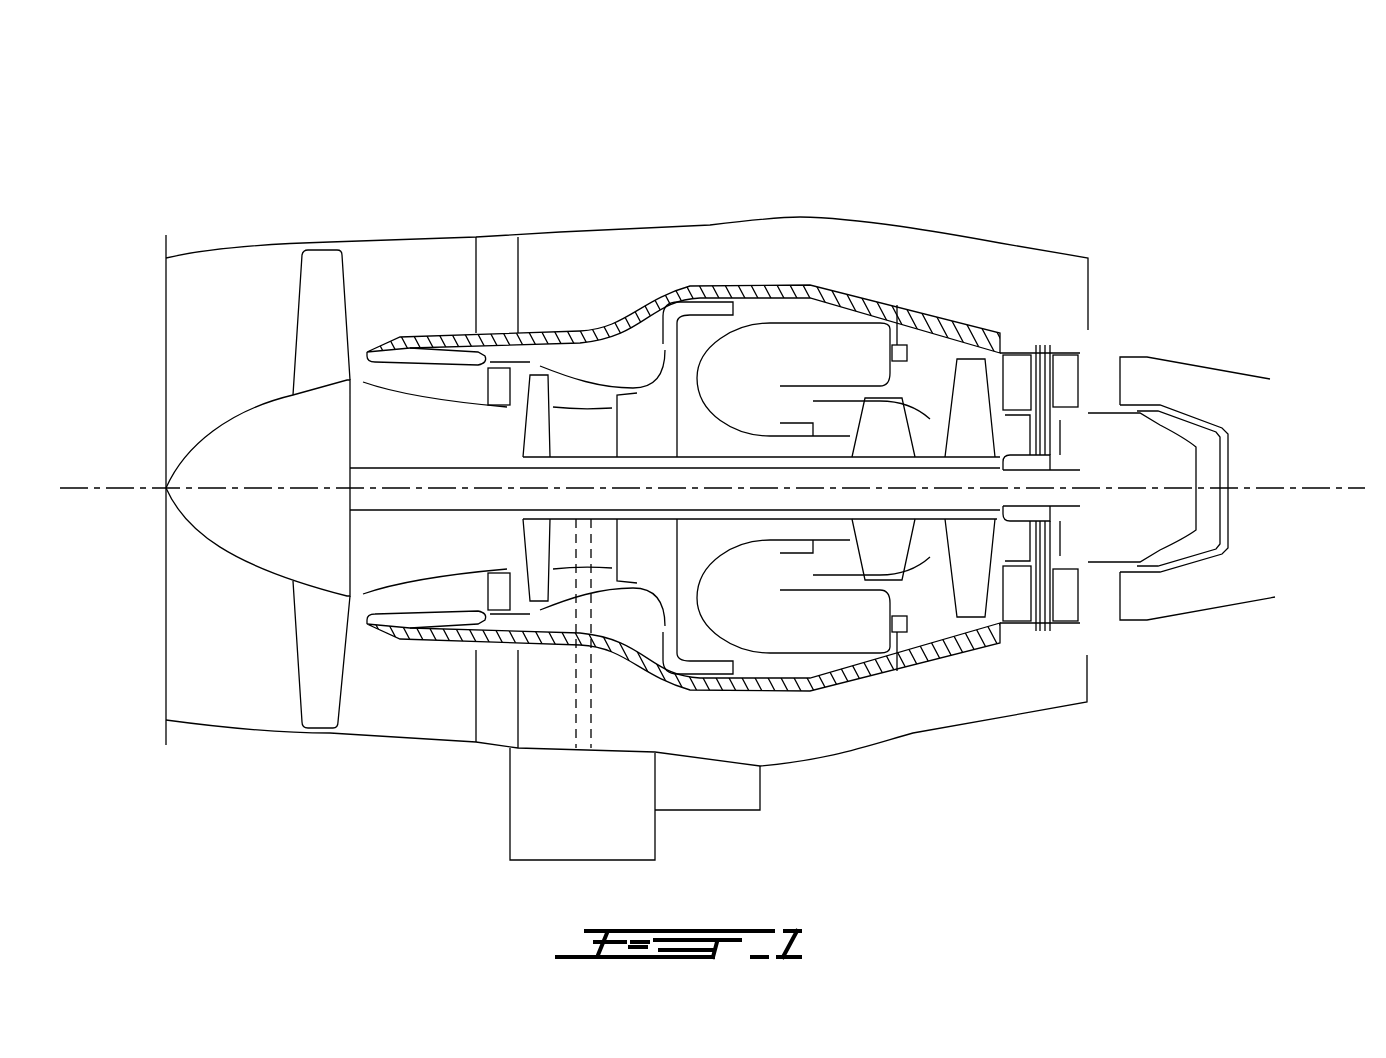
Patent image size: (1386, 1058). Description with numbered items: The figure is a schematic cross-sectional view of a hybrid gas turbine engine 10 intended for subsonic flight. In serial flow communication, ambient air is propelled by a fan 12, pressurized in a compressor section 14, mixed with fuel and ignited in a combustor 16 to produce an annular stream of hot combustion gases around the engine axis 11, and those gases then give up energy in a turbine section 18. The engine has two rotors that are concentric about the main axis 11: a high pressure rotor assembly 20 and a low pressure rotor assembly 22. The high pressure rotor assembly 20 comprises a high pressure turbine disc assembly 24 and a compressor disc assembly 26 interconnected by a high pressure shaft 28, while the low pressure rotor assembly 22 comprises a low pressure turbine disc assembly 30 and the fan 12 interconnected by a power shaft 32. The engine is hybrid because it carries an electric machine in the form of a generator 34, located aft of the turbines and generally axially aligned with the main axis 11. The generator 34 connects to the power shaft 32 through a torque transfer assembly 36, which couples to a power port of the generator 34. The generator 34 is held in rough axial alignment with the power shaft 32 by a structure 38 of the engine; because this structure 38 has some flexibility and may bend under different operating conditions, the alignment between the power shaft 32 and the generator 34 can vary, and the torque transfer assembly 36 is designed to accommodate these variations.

The gas turbine engine 10 is at (980, 148).
The engine axis 11 is at (1345, 490).
The fan 12 is at (315, 645).
The compressor section 14 is at (573, 387).
The combustor 16 is at (806, 345).
The turbine section 18 is at (930, 555).
The high pressure rotor assembly 20 is at (720, 455).
The low pressure rotor assembly 22 is at (778, 460).
The high pressure turbine disc assembly 24 is at (945, 362).
The compressor disc assembly 26 is at (540, 410).
The high pressure shaft 28 is at (748, 457).
The low pressure turbine disc assembly 30 is at (980, 407).
The power shaft 32 is at (893, 420).
The generator 34 is at (1145, 447).
The torque transfer assembly 36 is at (1045, 490).
The structure 38 is at (893, 665).